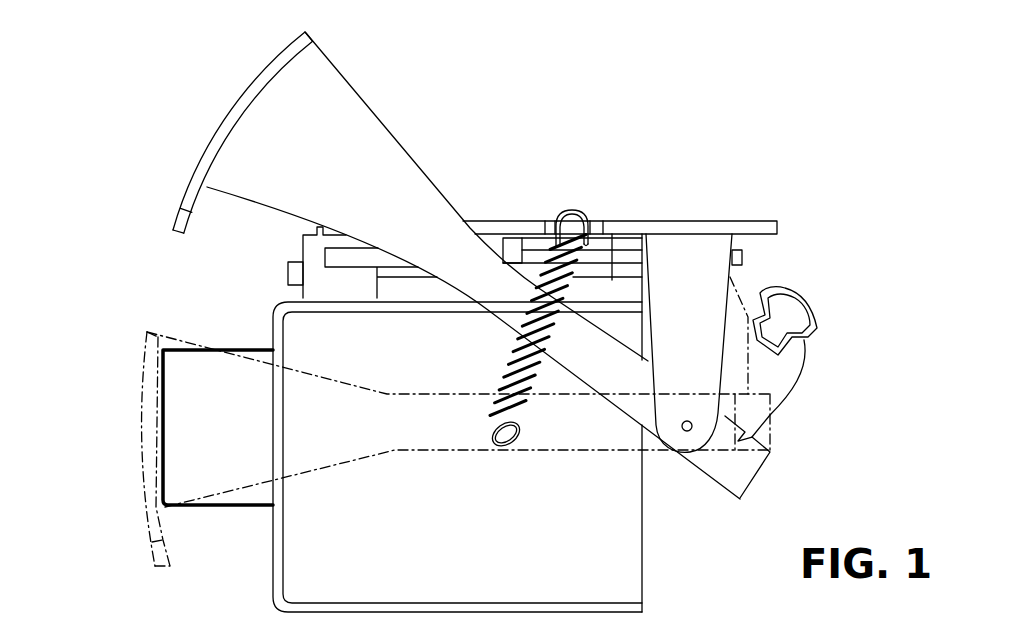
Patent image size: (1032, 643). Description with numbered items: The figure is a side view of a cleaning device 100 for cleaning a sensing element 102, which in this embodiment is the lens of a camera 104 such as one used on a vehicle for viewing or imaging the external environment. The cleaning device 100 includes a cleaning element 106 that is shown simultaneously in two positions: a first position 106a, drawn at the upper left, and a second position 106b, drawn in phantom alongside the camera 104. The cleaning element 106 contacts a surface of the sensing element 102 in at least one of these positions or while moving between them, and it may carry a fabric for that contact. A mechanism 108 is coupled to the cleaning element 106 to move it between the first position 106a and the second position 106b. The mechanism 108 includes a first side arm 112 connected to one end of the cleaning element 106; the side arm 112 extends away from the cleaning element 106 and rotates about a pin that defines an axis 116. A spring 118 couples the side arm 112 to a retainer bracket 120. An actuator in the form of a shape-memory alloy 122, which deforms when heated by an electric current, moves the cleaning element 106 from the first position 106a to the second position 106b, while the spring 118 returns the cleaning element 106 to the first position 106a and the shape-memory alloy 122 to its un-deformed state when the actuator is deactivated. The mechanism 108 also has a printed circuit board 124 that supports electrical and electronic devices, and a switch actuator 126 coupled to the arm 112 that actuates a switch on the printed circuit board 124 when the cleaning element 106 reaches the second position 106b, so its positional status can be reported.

The cleaning device 100 is at (792, 143).
The sensing element 102 is at (262, 498).
The camera 104 is at (622, 555).
The cleaning element 106 is at (273, 82).
The first position of the cleaning element 106a is at (172, 147).
The second position of the cleaning element 106b is at (128, 362).
The mechanism 108 is at (561, 203).
The first side arm 112 is at (360, 155).
The axis 116 is at (687, 431).
The spring 118 is at (507, 363).
The retainer bracket 120 is at (698, 221).
The shape-memory alloy 122 is at (616, 225).
The printed circuit board 124 is at (742, 255).
The switch actuator 126 is at (798, 317).